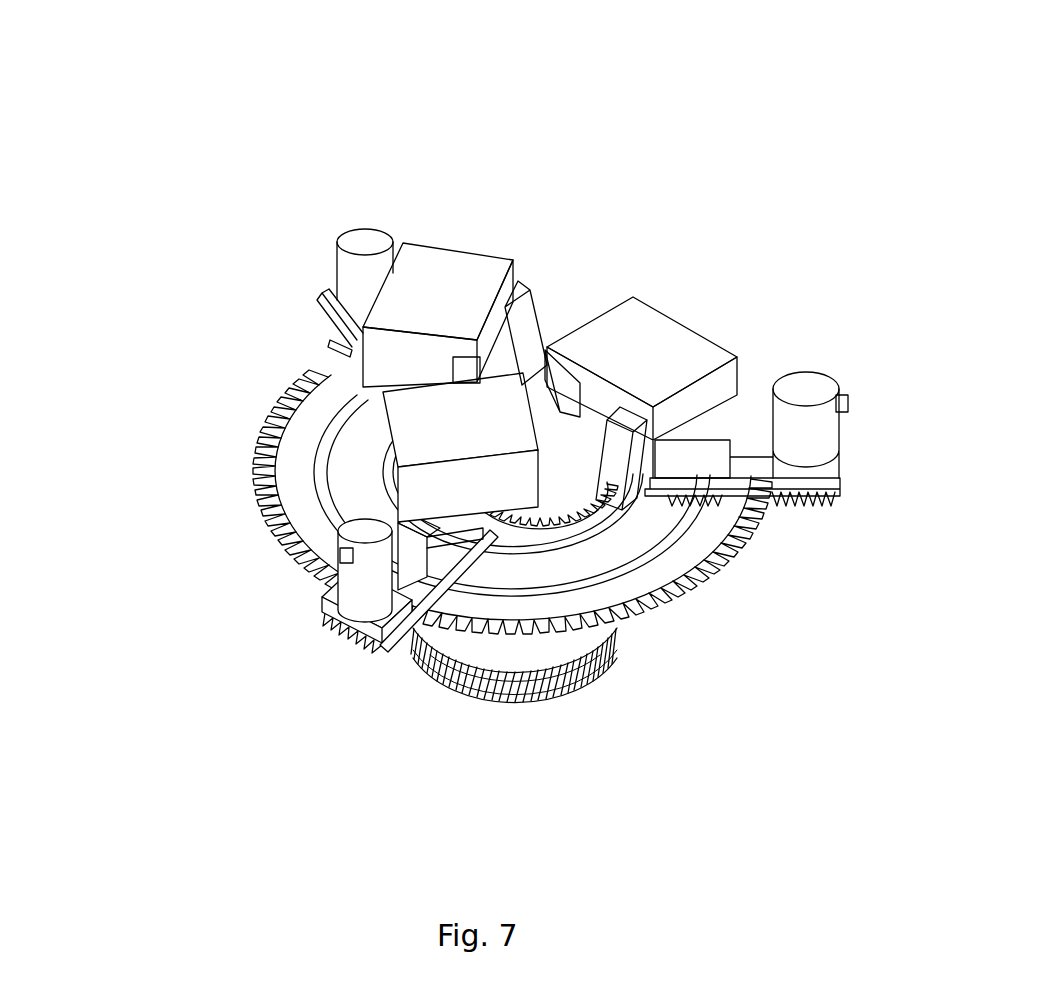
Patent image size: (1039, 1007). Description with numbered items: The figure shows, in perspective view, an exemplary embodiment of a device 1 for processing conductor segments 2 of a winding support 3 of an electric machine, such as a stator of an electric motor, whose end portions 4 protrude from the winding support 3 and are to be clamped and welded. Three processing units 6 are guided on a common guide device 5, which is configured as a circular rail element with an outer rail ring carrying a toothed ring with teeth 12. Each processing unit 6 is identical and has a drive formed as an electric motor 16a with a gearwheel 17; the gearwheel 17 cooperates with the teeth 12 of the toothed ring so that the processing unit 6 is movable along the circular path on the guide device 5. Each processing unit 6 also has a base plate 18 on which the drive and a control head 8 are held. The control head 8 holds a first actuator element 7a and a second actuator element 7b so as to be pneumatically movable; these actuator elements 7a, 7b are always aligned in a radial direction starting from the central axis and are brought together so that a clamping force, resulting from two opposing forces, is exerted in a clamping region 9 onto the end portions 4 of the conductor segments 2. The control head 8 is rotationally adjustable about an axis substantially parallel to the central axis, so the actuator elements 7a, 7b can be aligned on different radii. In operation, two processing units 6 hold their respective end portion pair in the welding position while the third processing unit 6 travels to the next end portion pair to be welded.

The device 1 is at (535, 440).
The conductor segments 2 is at (553, 683).
The winding support 3 is at (468, 650).
The end portions 4 is at (503, 693).
The guide device 5 is at (345, 469).
The processing unit 6 is at (411, 248).
The first actuator element 7a is at (607, 490).
The second actuator element 7b is at (550, 465).
The control head 8 is at (462, 248).
The clamping region 9 is at (578, 466).
The teeth 12 is at (737, 557).
The electric motor 16a is at (360, 247).
The gearwheel 17 is at (353, 648).
The base plate 18 is at (353, 340).